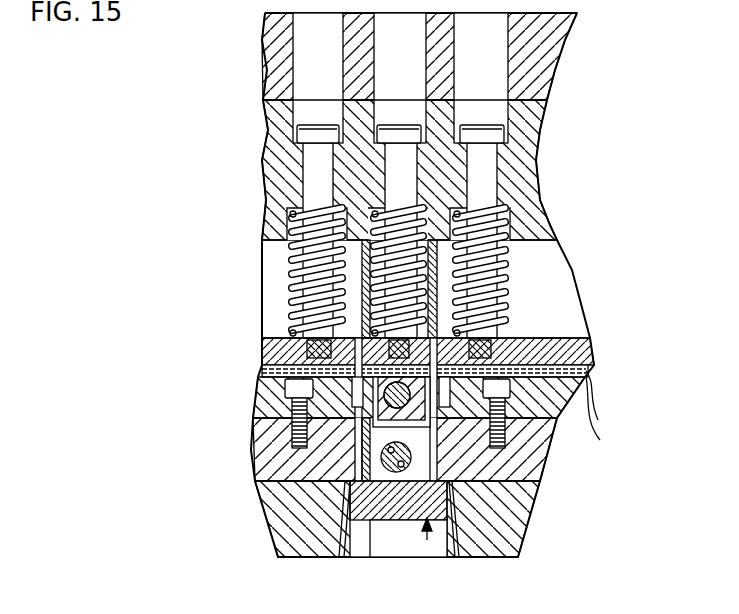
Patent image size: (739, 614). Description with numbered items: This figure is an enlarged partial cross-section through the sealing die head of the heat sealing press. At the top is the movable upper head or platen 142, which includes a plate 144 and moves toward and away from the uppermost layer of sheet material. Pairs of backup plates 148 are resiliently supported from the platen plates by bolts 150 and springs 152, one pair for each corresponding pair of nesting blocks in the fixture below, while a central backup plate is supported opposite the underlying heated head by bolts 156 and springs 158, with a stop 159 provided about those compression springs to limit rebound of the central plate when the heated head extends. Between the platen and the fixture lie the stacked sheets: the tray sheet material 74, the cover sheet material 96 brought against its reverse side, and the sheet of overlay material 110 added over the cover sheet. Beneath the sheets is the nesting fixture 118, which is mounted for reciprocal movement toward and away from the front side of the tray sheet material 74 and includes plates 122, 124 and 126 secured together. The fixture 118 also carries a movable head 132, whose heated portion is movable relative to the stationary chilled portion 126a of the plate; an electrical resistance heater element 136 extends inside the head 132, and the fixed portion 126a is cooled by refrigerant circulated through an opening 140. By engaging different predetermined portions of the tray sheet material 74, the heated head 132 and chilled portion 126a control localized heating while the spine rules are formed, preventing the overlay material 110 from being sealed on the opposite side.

The upper head or platen 142 is at (262, 78).
The plate 144 is at (546, 72).
The bolts 150 is at (312, 167).
The bolts 156 is at (400, 128).
The springs 158 is at (500, 223).
The stop 159 is at (298, 243).
The springs 152 is at (302, 252).
The backup plates 148 is at (262, 352).
The sheet of overlay material 110 is at (586, 366).
The sheet material 96 is at (609, 402).
The sheet material 74 is at (609, 414).
The nesting fixture 118 is at (550, 456).
The opening 140 is at (404, 405).
The plate 126 is at (258, 400).
The plate 124 is at (254, 437).
The stationary chilled portion 126a is at (378, 418).
The plate 122 is at (270, 504).
The movable head 132 is at (427, 540).
The electrical resistance heater element 136 is at (407, 465).